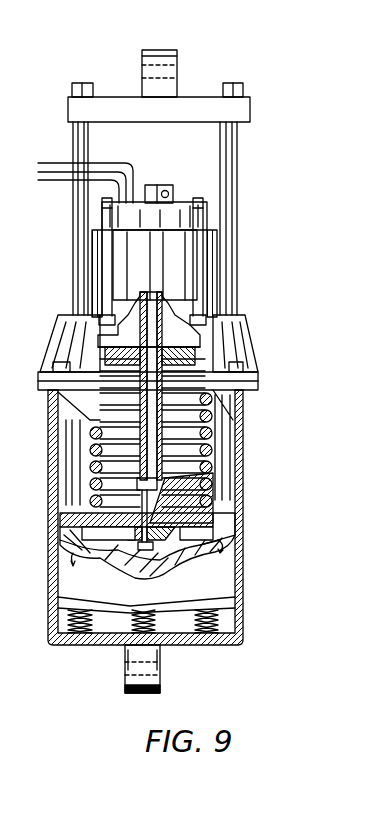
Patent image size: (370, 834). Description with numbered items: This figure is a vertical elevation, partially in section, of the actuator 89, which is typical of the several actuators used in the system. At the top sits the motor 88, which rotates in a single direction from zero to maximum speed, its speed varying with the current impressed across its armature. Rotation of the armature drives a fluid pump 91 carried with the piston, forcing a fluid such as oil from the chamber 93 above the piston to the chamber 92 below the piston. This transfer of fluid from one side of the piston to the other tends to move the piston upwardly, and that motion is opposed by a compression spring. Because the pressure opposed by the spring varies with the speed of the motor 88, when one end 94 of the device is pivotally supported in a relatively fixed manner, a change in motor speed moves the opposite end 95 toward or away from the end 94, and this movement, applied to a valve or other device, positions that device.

The motor 88 is at (92, 258).
The actuator 89 is at (290, 243).
The fluid pump 91 is at (176, 535).
The chamber 92 is at (146, 607).
The chamber 93 is at (207, 448).
The end 94 is at (160, 683).
The end 95 is at (178, 66).